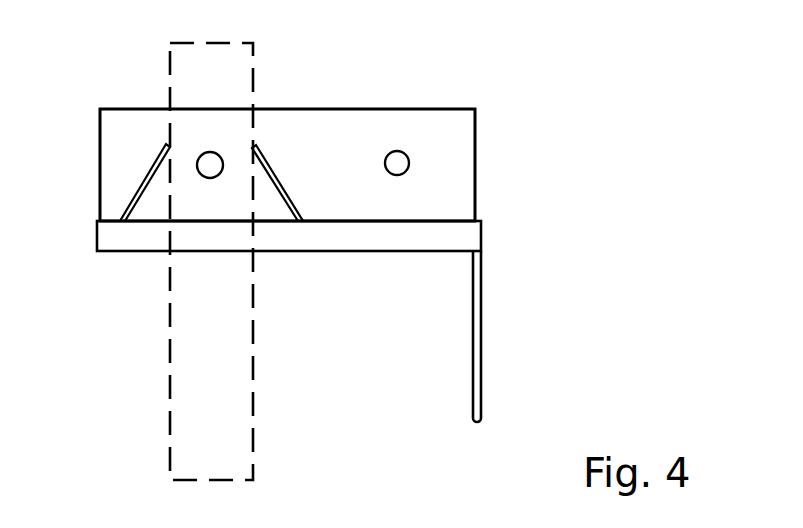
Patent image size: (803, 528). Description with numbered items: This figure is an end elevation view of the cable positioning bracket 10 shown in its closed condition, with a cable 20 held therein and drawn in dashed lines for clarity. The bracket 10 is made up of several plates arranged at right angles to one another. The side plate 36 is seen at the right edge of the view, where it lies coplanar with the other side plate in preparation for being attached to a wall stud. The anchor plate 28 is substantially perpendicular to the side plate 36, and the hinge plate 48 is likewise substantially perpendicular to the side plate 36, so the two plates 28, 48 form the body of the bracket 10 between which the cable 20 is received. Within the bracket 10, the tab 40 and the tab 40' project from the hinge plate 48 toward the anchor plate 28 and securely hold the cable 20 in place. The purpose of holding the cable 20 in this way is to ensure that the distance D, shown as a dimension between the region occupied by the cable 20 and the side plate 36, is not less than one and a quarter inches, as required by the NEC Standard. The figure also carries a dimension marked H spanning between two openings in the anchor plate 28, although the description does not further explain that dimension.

The cable positioning bracket 10 is at (532, 136).
The cable 20 is at (225, 89).
The anchor plate 28 is at (318, 178).
The side plate 36 is at (481, 318).
The tab 40 is at (279, 171).
The tab 40' is at (102, 177).
The hinge plate 48 is at (362, 253).
The hole spacing H is at (391, 152).
The distance D is at (262, 392).